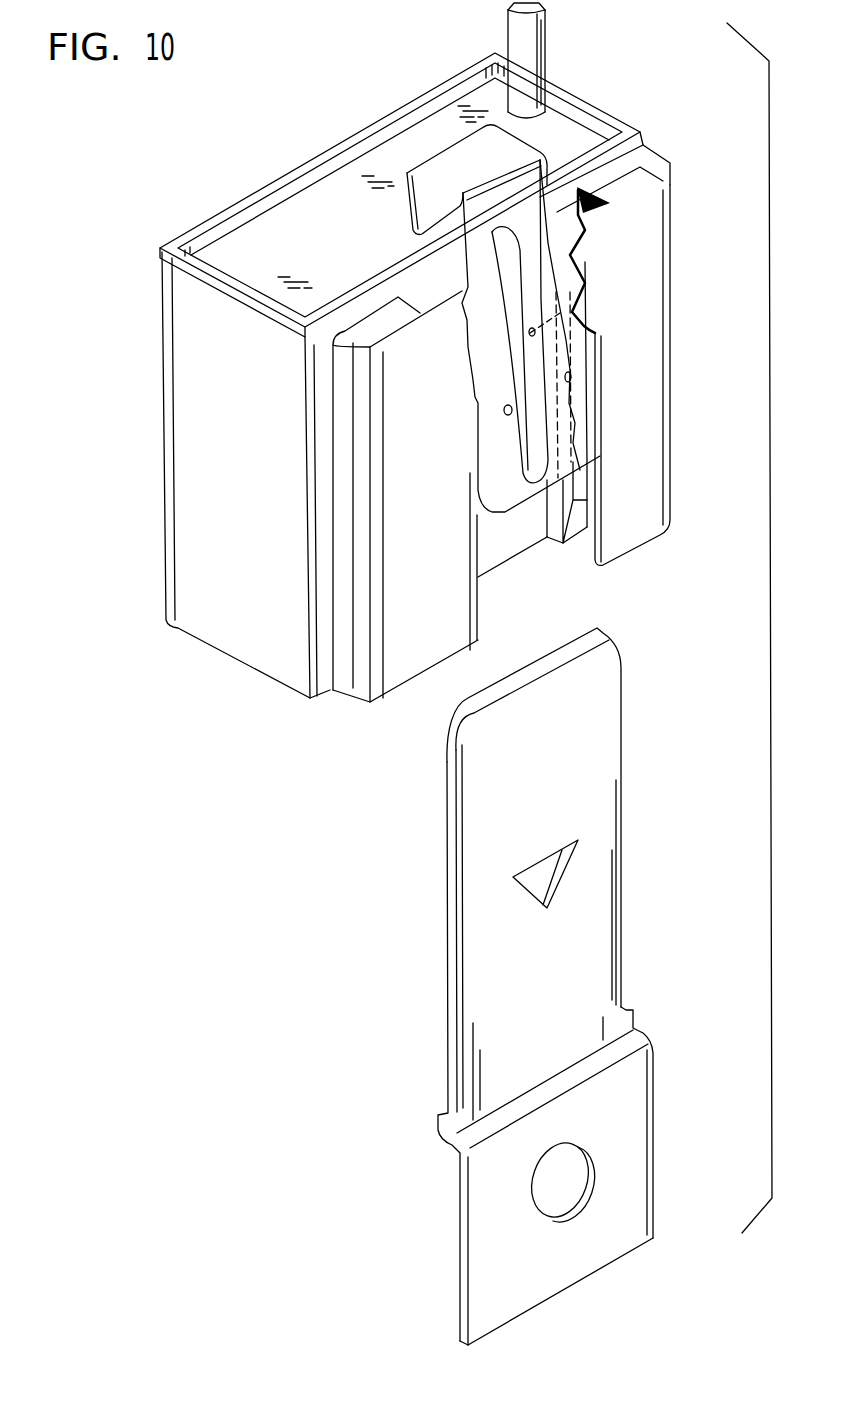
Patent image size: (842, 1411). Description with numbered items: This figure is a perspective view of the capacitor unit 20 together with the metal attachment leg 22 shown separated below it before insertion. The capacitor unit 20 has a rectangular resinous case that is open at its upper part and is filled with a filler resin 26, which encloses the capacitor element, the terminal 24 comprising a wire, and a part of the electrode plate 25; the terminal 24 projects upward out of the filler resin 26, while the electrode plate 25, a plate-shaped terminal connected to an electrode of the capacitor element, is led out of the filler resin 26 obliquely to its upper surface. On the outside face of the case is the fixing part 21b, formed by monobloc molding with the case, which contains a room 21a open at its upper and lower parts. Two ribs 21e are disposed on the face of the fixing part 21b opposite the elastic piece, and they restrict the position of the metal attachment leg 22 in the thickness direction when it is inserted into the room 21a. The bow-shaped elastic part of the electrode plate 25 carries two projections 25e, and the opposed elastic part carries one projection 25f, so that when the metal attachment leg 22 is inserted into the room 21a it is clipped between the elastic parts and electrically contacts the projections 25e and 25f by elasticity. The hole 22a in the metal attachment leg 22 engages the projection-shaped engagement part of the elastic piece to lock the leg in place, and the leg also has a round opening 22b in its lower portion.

The capacitor unit 20 is at (150, 376).
The room 21a is at (655, 165).
The fixing part 21b is at (652, 268).
The ribs 21e is at (652, 255).
The metal attachment leg 22 is at (487, 875).
The hole 22a is at (547, 872).
The round hole 22b is at (563, 1190).
The terminal 24 is at (525, 48).
The electrode plate 25 is at (530, 148).
The projections 25e is at (513, 410).
The projection 25f is at (477, 393).
The filler resin 26 is at (282, 222).